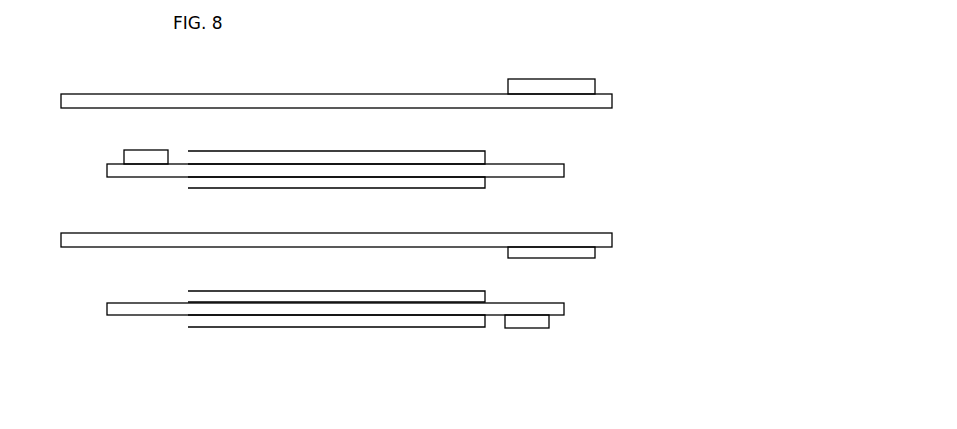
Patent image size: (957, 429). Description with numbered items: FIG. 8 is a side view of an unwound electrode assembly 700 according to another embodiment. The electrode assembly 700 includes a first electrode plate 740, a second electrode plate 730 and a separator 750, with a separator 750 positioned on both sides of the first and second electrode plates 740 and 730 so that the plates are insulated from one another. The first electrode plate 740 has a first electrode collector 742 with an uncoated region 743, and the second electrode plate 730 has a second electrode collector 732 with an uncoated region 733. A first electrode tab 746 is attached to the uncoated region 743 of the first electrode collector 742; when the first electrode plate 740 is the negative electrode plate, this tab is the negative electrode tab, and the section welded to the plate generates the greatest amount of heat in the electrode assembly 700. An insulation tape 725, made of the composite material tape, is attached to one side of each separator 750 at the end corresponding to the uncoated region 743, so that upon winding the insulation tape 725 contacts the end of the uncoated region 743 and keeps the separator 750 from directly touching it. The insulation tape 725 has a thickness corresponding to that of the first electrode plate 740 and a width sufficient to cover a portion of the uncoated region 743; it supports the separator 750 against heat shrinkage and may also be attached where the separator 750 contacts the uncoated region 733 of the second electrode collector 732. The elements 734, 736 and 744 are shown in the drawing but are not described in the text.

The electrode assembly 700 is at (706, 174).
The insulation tape 725 is at (575, 85).
The second electrode plate 730 is at (611, 148).
The second electrode collector 732 is at (565, 170).
The uncoated region of the second electrode collector 733 is at (541, 177).
The second electrode plate 734 is at (475, 152).
The electrode tab 736 is at (126, 153).
The first electrode plate 740 is at (649, 327).
The first electrode collector 742 is at (565, 308).
The uncoated region of the first electrode collector 743 is at (145, 316).
The fourth electrode plate 744 is at (475, 293).
The first electrode tab 746 is at (548, 320).
The separator 750 is at (606, 100).